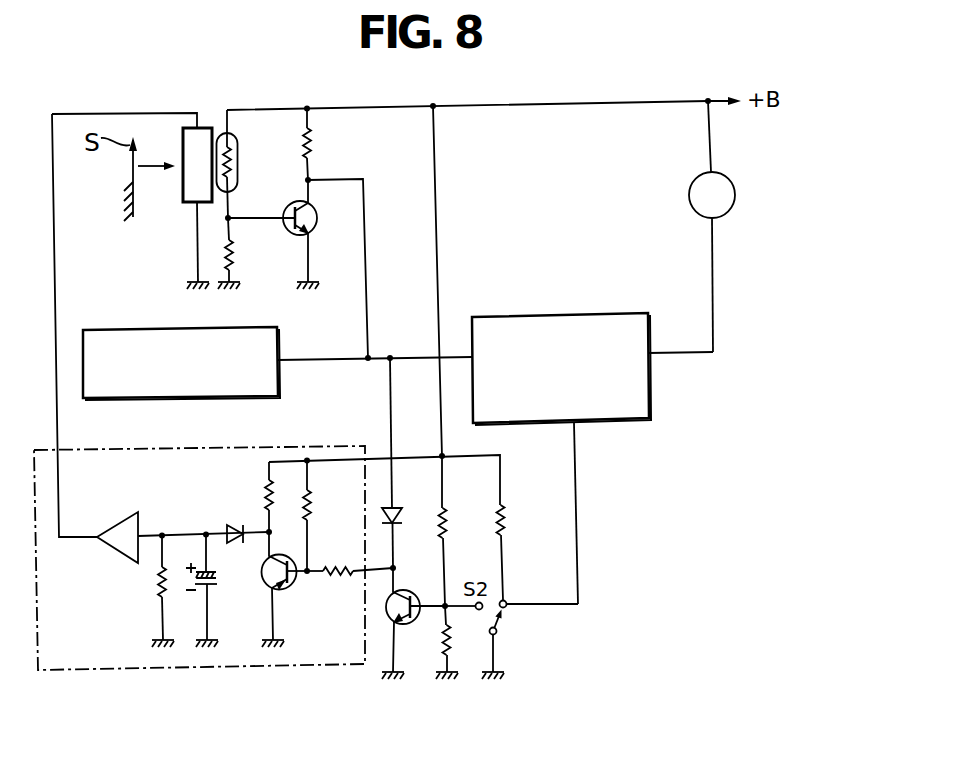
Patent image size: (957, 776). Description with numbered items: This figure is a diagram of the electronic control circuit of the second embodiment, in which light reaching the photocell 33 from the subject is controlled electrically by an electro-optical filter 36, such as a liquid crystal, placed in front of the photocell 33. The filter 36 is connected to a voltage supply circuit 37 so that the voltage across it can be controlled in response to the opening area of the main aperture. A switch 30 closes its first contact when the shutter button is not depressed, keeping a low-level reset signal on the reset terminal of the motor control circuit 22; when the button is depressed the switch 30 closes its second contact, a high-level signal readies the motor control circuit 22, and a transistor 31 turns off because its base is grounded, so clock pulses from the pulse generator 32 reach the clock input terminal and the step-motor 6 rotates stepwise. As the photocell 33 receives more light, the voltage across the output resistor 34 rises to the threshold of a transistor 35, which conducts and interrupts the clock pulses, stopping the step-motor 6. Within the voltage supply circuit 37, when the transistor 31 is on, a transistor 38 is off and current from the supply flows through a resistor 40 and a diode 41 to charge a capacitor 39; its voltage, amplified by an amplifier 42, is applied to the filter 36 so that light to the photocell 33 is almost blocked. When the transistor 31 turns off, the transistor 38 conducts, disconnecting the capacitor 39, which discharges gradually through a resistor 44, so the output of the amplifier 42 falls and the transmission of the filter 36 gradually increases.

The step-motor 6 is at (689, 198).
The motor control circuit 22 is at (556, 314).
The switch 30 is at (507, 614).
The transistor 31 is at (410, 590).
The pulse generator 32 is at (140, 328).
The photocell 33 is at (239, 152).
The output resistor 34 is at (235, 253).
The transistor 35 is at (292, 202).
The electro-optical filter 36 is at (185, 190).
The voltage supply circuit 37 is at (92, 670).
The transistor 38 is at (293, 582).
The capacitor 39 is at (219, 578).
The resistor 40 is at (263, 497).
The diode 41 is at (227, 528).
The amplifier 42 is at (115, 525).
The resistor 44 is at (153, 583).